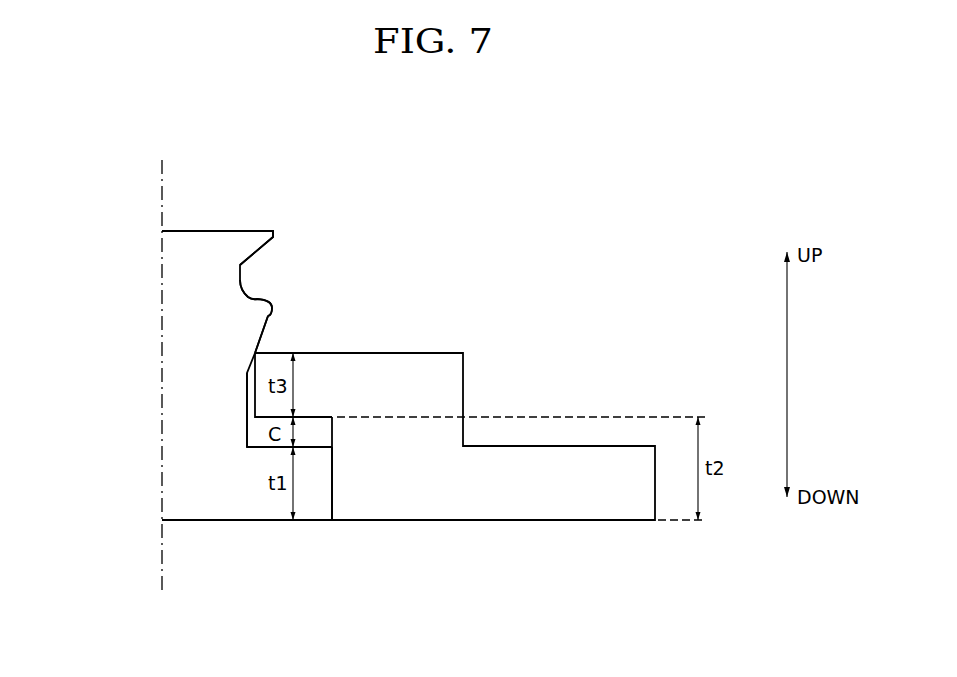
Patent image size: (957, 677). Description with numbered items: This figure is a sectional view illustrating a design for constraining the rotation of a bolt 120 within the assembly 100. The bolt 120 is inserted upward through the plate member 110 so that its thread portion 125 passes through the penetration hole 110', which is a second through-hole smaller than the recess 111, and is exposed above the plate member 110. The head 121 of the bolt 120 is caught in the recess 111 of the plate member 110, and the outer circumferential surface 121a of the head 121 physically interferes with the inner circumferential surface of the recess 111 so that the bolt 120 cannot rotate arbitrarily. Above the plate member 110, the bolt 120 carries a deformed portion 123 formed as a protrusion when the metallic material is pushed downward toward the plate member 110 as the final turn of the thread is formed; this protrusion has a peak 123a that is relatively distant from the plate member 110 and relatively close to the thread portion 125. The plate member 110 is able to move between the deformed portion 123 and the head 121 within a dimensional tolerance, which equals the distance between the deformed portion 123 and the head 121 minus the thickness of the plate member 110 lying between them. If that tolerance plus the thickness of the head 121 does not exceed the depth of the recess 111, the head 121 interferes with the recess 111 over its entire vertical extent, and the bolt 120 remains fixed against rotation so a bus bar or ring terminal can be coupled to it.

The assembly 100 is at (133, 530).
The plate member 110 is at (408, 482).
The penetration hole 110' is at (166, 410).
The recess 111 is at (332, 472).
The bolt 120 is at (228, 206).
The head 121 is at (223, 492).
The outer circumferential surface 121a is at (332, 493).
The deformed portion 123 is at (268, 318).
The peak 123a is at (272, 310).
The thread portion 125 is at (273, 235).